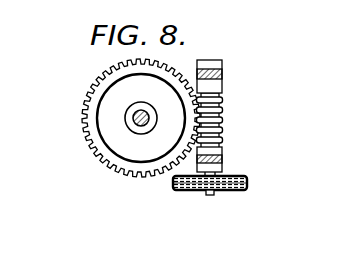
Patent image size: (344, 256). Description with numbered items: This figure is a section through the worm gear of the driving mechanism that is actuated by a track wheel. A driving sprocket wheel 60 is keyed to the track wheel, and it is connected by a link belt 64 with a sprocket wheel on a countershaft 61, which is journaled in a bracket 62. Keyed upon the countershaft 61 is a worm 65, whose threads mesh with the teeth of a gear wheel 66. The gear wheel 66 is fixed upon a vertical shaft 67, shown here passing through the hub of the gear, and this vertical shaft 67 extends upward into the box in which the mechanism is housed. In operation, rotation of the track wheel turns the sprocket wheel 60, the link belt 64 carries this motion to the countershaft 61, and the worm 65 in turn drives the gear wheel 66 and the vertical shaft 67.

The sprocket wheel 60 is at (183, 191).
The countershaft 61 is at (210, 195).
The bracket 62 is at (222, 76).
The link belt 64 is at (247, 182).
The worm 65 is at (222, 112).
The gear wheel 66 is at (83, 114).
The vertical shaft 67 is at (135, 119).